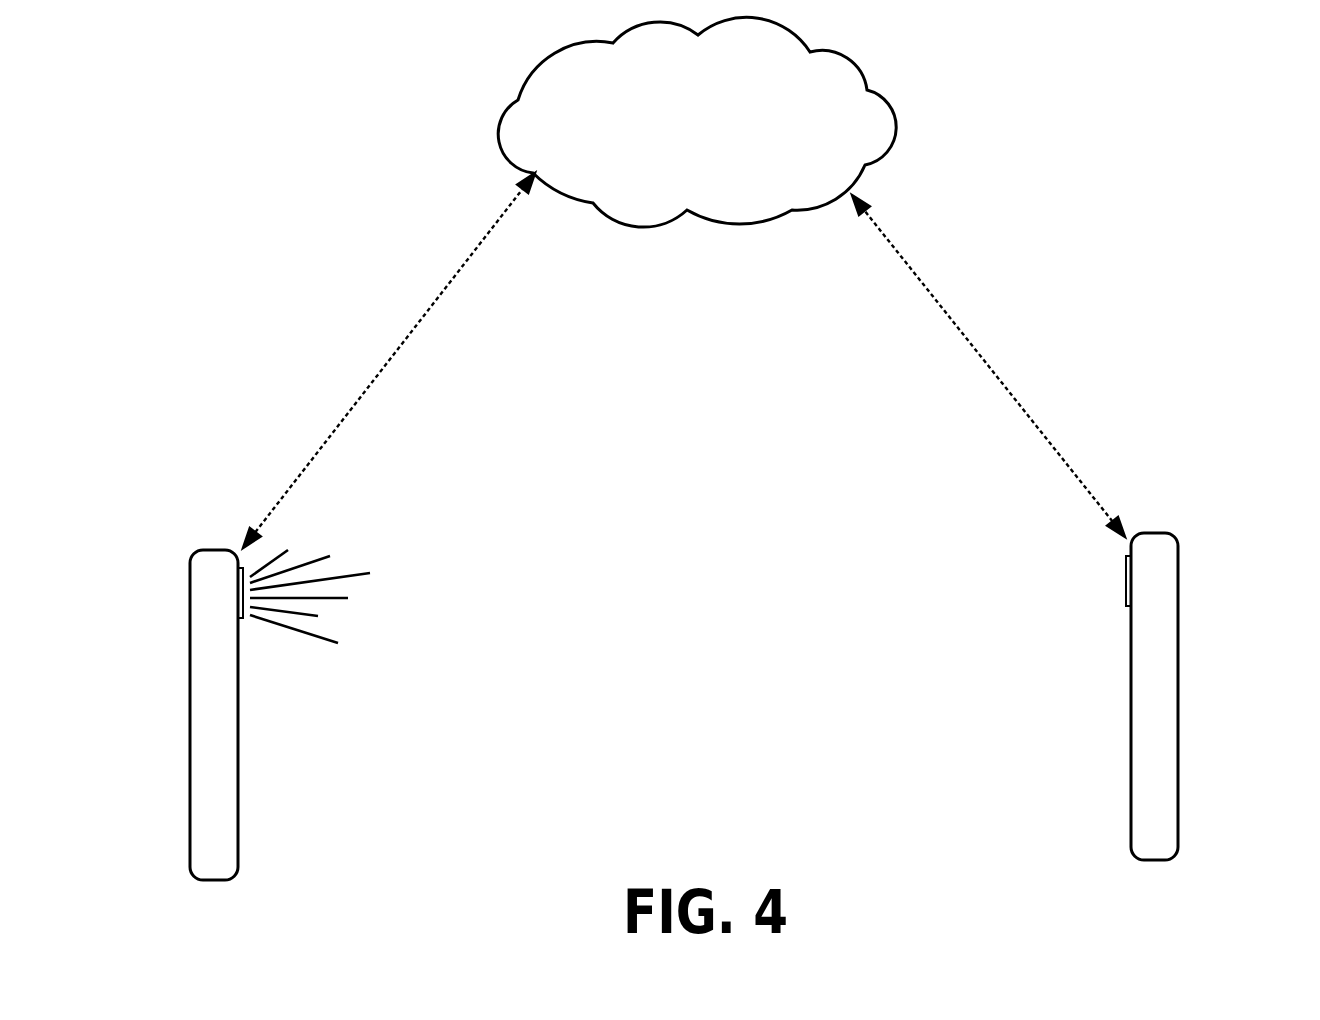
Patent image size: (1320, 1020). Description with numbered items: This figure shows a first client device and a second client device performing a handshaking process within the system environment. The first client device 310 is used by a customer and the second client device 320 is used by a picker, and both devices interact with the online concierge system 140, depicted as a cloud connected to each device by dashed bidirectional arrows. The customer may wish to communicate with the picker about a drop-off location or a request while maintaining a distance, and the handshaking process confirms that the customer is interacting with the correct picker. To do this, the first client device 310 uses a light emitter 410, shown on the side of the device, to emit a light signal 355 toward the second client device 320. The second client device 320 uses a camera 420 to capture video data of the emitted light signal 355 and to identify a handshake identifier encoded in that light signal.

The online concierge system 140 is at (678, 166).
The first client device 310 is at (205, 548).
The second client device 320 is at (1176, 530).
The light signal 355 is at (363, 575).
The light emitter 410 is at (243, 618).
The camera 420 is at (1131, 618).